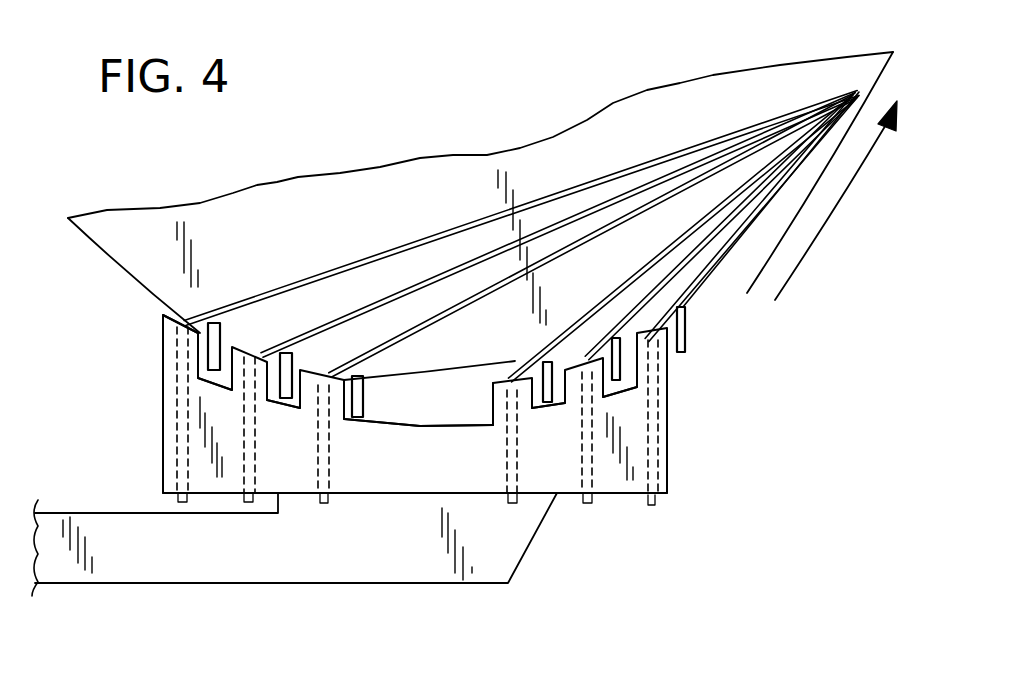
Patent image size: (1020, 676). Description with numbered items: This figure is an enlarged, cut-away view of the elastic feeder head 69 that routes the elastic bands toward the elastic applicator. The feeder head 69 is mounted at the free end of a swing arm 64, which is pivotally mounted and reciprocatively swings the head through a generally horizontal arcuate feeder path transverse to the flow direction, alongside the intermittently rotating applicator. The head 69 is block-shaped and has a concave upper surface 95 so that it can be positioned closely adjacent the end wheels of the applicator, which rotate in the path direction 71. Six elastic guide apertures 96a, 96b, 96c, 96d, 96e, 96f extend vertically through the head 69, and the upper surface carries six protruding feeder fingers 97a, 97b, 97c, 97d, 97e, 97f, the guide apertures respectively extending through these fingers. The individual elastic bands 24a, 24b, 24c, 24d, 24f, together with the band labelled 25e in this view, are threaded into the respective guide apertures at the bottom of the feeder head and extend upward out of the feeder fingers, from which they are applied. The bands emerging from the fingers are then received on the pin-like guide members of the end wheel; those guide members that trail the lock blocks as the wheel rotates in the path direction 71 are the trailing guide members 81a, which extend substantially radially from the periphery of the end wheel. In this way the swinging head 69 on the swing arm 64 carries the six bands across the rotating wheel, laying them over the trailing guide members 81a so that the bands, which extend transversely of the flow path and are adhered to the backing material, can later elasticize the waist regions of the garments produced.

The elastic band 24a is at (183, 502).
The elastic band 24b is at (248, 502).
The elastic band 24c is at (325, 503).
The elastic band 24d is at (512, 503).
The pin 25e is at (588, 503).
The elastic band 24f is at (653, 505).
The swing arm 64 is at (72, 585).
The elastic feeder head 69 is at (672, 431).
The path direction 71 is at (837, 210).
The trailing guide members 81a is at (353, 377).
The concave upper surface 95 is at (407, 422).
The elastic guide aperture 96a is at (178, 460).
The elastic guide aperture 96b is at (244, 457).
The elastic guide aperture 96c is at (330, 463).
The elastic guide aperture 96d is at (505, 460).
The elastic guide aperture 96e is at (582, 418).
The elastic guide aperture 96f is at (660, 460).
The feeder finger 97a is at (163, 352).
The feeder finger 97b is at (222, 376).
The feeder finger 97c is at (290, 408).
The feeder finger 97d is at (493, 403).
The feeder finger 97e is at (757, 333).
The feeder finger 97f is at (667, 358).